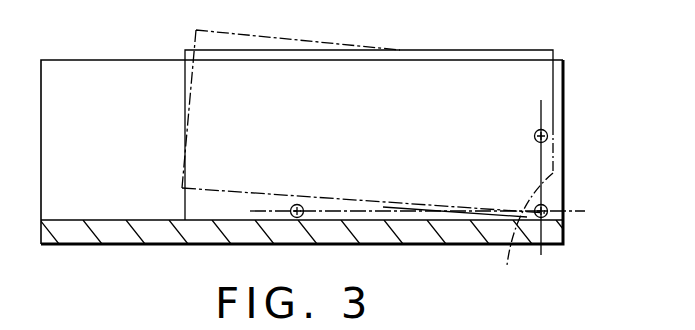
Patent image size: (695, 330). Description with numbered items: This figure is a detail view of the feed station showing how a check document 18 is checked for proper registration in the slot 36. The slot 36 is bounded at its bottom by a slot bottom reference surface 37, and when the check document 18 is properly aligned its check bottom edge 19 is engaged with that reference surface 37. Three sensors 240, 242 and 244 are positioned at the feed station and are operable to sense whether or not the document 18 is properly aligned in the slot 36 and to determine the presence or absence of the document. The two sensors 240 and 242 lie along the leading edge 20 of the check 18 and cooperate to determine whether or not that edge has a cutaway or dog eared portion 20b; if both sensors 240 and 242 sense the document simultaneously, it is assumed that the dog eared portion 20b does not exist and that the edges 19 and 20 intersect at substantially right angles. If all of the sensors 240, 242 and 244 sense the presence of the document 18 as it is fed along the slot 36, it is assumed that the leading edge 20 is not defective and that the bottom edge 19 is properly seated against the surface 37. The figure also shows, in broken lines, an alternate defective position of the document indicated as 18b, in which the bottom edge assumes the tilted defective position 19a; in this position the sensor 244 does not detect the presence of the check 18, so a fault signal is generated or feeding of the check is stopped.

The check document 18 is at (507, 50).
The defective position of the check document 18b is at (333, 44).
The check bottom edge 19 is at (400, 220).
The defective position of the bottom edge 19a is at (200, 186).
The leading edge of the check 20 is at (553, 82).
The dog eared portion 20b is at (509, 268).
The slot 36 is at (107, 79).
The slot bottom reference surface 37 is at (96, 218).
The sensor 240 is at (547, 134).
The sensor 242 is at (546, 207).
The sensor 244 is at (297, 205).